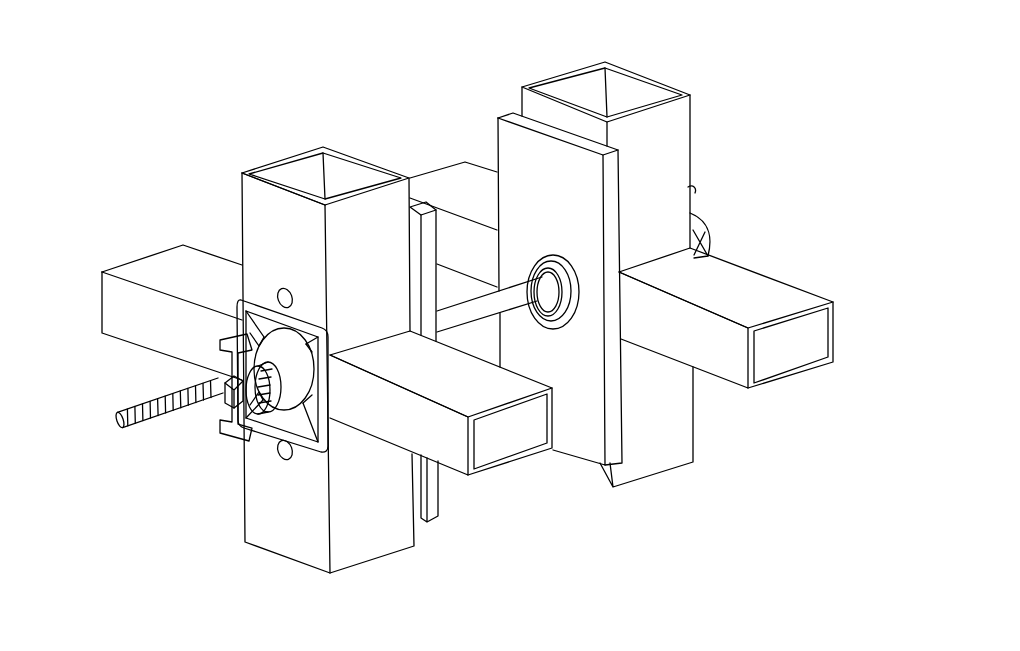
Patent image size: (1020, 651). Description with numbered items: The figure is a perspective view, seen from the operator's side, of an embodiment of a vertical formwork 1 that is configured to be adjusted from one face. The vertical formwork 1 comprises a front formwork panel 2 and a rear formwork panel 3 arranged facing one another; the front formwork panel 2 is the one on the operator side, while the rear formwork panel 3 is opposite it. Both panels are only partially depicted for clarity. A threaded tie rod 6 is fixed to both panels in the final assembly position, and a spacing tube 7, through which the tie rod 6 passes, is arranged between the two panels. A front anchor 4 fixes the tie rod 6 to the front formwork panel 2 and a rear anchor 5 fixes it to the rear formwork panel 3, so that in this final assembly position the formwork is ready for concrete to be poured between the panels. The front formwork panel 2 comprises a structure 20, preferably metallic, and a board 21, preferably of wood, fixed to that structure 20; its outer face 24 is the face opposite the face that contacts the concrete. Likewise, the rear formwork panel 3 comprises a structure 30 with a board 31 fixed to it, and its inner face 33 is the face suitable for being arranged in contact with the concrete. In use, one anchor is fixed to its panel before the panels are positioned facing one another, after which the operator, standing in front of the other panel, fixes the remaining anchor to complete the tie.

The vertical formwork 1 is at (397, 113).
The front formwork panel 2 is at (190, 148).
The rear formwork panel 3 is at (667, 62).
The front anchor 4 is at (277, 432).
The rear anchor 5 is at (697, 240).
The threaded tie rod 6 is at (159, 402).
The spacing tube 7 is at (477, 320).
The structure 20 is at (283, 218).
The board 21 is at (430, 497).
The outer face 24 is at (292, 259).
The structure 30 is at (670, 192).
The board 31 is at (610, 183).
The inner face 33 is at (565, 199).